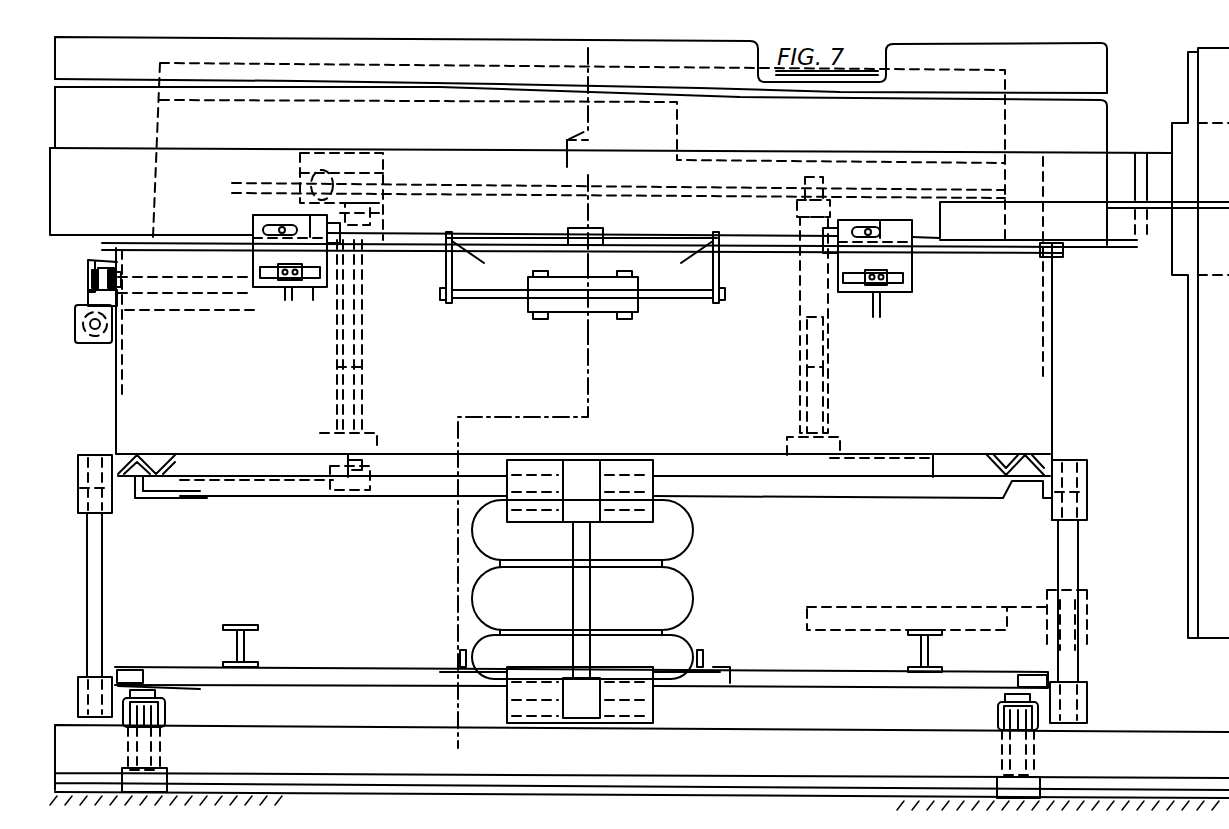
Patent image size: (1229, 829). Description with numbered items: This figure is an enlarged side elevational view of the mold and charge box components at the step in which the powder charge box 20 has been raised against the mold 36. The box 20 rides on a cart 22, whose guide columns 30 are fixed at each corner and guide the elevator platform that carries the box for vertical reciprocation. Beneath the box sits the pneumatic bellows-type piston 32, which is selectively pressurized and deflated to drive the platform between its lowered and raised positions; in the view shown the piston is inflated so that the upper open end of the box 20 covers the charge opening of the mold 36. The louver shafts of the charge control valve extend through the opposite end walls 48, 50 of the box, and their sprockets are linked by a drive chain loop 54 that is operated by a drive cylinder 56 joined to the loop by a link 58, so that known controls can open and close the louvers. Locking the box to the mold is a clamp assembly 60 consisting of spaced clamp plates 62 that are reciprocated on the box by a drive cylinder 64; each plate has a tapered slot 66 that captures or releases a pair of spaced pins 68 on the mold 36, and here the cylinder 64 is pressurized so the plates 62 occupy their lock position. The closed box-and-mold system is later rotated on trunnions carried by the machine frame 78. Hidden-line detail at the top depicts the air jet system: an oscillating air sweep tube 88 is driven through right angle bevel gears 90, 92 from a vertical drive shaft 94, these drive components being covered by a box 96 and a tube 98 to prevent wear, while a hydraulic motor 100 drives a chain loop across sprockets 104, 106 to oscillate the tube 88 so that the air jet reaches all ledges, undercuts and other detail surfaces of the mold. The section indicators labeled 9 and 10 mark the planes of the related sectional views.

The section line 9- 9 is at (555, 263).
The section line 10- 10 is at (586, 63).
The powder charge box 20 is at (583, 417).
The cart 22 is at (346, 665).
The guide columns 30 is at (103, 608).
The pneumatic bellows-type piston 32 is at (703, 594).
The mold 36 is at (639, 142).
The end wall 48 is at (124, 402).
The end wall 50 is at (1043, 383).
The drive chain loop 54 is at (108, 265).
The drive cylinder 56 is at (118, 340).
The link 58 is at (113, 300).
The clamp assembly 60 is at (638, 242).
The clamp plates 62 is at (262, 260).
The drive cylinder 64 is at (868, 229).
The tapered slot 66 is at (265, 232).
The pins 68 is at (282, 227).
The machine frame 78 is at (1212, 316).
The air sweep tube 88 is at (608, 187).
The bevel gear 90 is at (390, 173).
The bevel gear 92 is at (388, 215).
The vertical drive shaft 94 is at (363, 393).
The box 96 is at (345, 150).
The tube 98 is at (365, 350).
The hydraulic motor 100 is at (438, 478).
The sprocket 104 is at (187, 505).
The sprocket 106 is at (372, 454).